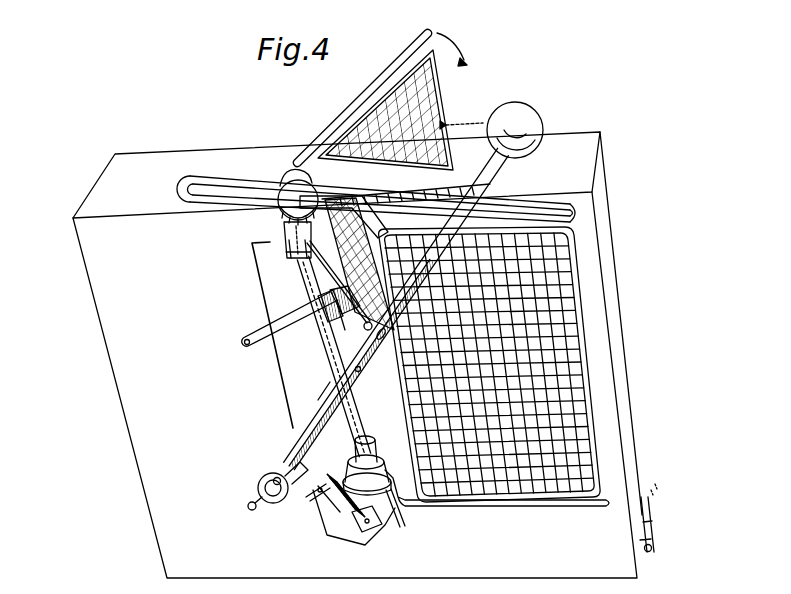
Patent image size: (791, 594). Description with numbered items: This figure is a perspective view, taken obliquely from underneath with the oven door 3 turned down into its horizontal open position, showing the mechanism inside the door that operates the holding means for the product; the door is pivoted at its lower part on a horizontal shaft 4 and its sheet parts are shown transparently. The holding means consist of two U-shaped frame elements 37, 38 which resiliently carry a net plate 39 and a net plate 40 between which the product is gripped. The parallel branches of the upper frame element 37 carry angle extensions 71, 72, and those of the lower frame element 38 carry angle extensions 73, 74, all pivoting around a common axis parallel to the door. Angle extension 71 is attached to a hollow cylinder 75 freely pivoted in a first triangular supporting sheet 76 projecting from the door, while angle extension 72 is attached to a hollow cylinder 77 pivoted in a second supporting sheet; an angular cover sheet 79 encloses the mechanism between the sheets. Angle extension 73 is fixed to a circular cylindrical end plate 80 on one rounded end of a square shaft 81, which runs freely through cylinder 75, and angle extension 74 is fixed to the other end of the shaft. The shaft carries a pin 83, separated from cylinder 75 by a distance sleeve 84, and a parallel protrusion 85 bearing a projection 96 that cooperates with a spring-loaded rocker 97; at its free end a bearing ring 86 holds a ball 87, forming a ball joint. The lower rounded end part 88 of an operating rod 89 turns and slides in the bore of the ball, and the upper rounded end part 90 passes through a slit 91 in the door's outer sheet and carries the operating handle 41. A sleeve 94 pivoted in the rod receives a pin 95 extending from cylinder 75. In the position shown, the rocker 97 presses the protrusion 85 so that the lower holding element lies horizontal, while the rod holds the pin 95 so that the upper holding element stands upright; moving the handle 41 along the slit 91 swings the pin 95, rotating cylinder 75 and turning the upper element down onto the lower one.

The oven door 3 is at (120, 177).
The horizontal shaft 4 is at (646, 538).
The U-shaped frame element 37 is at (398, 55).
The U-shaped frame element 38 is at (573, 212).
The net plate 39 is at (442, 100).
The net plate 40 is at (578, 278).
The operating handle 41 is at (533, 107).
The angle extension 71 is at (283, 177).
The angle extension 72 is at (387, 498).
The angle extension 73 is at (353, 196).
The angle extension 74 is at (408, 502).
The hollow cylinder 75 is at (290, 250).
The first supporting sheet 76 is at (284, 232).
The hollow cylinder 77 is at (383, 527).
The angular cover sheet 79 is at (287, 365).
The circular cylindrical end plate 80 is at (280, 214).
The square shaft 81 is at (334, 356).
The pin 83 is at (238, 344).
The distance sleeve 84 is at (292, 312).
The protrusion 85 is at (318, 492).
The bearing ring 86 is at (258, 486).
The ball 87 is at (272, 478).
The lower rounded end part 88 is at (248, 506).
The operating rod 89 is at (308, 404).
The upper rounded end part 90 is at (498, 165).
The slit 91 is at (183, 206).
The sleeve 94 is at (338, 334).
The pin 95 is at (306, 280).
The projection 96 is at (322, 478).
The spring-loaded rocker 97 is at (340, 520).